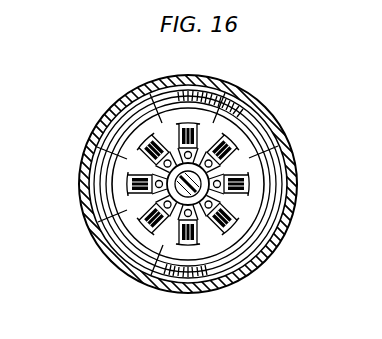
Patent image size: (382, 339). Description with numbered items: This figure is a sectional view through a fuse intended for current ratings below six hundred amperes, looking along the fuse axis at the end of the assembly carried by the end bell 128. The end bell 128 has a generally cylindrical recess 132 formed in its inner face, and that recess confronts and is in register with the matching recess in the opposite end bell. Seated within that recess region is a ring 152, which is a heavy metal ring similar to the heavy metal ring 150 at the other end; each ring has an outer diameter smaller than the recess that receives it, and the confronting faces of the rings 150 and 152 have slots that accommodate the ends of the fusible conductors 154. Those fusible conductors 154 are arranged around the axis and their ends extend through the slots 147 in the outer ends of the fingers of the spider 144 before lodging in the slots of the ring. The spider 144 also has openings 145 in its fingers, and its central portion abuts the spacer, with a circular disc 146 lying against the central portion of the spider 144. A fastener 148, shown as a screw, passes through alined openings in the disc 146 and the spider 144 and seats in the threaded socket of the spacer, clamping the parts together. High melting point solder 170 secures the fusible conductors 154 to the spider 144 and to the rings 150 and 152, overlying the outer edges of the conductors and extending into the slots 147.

The end bell 128 is at (262, 123).
The generally cylindrical recess 132 is at (263, 263).
The spider 144 is at (296, 158).
The openings 145 is at (201, 152).
The circular disc 146 is at (138, 272).
The slots 147 is at (166, 280).
The fastener 148 is at (209, 296).
The heavy metal ring 150 is at (86, 180).
The ring 152 is at (234, 283).
The fusible conductors 154 is at (191, 80).
The high melting point solder 170 is at (262, 142).